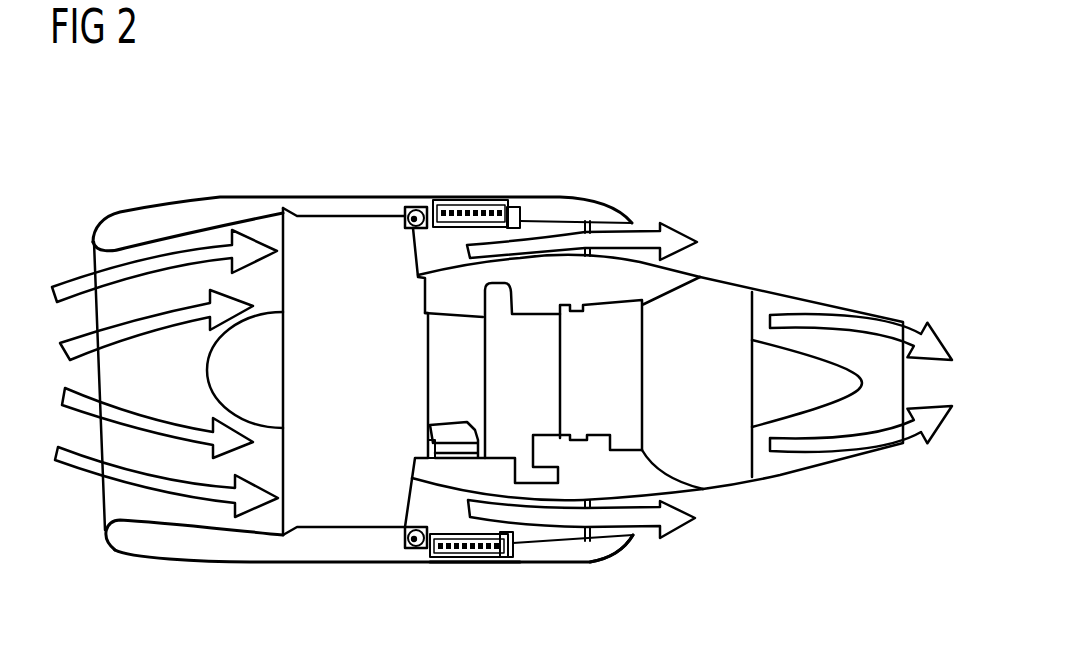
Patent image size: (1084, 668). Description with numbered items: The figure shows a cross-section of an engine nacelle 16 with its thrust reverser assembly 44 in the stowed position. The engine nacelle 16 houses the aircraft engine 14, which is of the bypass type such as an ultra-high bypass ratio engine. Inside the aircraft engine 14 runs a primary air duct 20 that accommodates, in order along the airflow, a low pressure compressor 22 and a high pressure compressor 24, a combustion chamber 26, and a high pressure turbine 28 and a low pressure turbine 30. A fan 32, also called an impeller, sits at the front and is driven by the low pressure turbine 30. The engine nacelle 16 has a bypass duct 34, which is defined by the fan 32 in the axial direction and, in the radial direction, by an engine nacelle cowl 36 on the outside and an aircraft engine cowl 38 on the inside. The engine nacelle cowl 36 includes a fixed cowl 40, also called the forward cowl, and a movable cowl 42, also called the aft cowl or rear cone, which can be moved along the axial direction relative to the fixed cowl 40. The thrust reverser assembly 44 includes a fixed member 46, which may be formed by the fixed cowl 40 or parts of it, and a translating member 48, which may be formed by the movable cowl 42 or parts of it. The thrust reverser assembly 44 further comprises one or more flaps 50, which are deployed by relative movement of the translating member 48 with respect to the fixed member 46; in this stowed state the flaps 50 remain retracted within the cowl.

The aircraft engine 14 is at (252, 103).
The engine nacelle 16 is at (185, 176).
The primary air duct 20 is at (186, 367).
The low pressure compressor 22 is at (438, 327).
The high pressure compressor 24 is at (455, 368).
The combustion chamber 26 is at (530, 330).
The high pressure turbine 28 is at (609, 320).
The low pressure turbine 30 is at (718, 296).
The fan 32 is at (349, 202).
The bypass duct 34 is at (422, 253).
The engine nacelle cowl 36 is at (180, 548).
The aircraft engine cowl 38 is at (663, 483).
The fixed cowl 40 is at (250, 548).
The movable cowl 42 is at (537, 548).
The thrust reverser assembly 44 is at (448, 574).
The fixed member 46 is at (307, 547).
The translating member 48 is at (593, 548).
The flap 50 is at (465, 547).